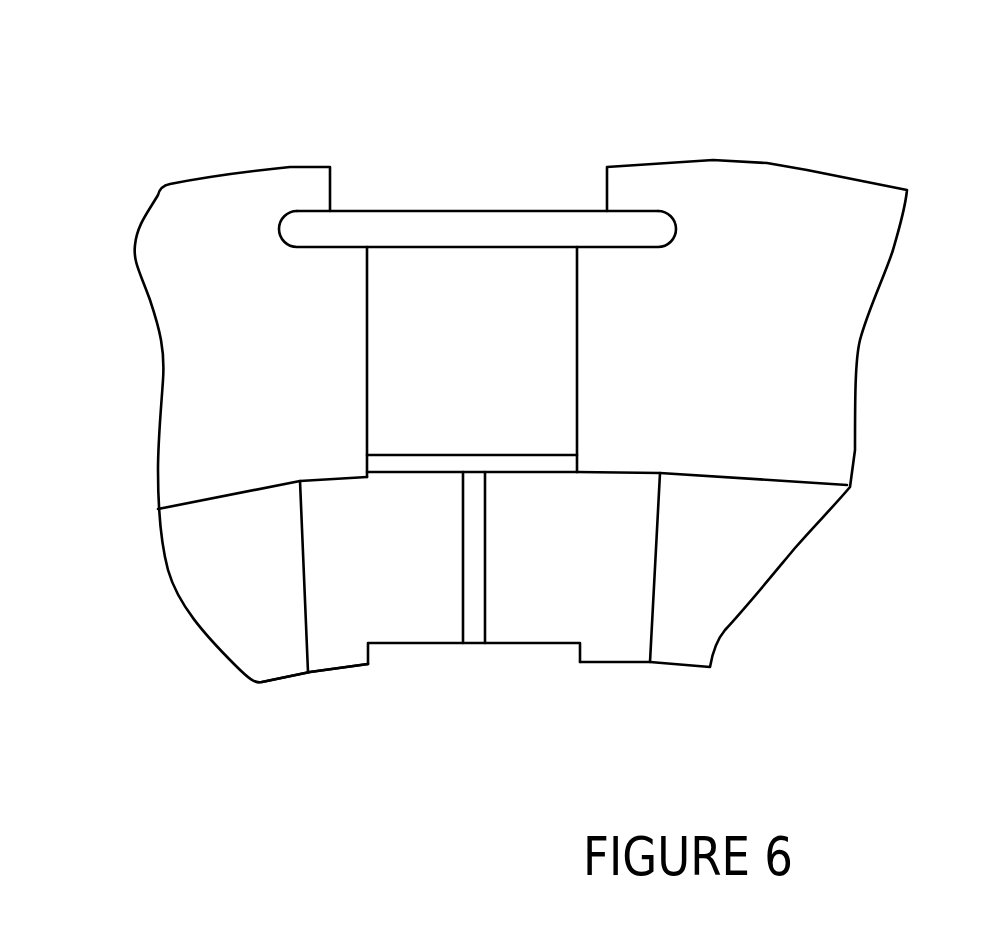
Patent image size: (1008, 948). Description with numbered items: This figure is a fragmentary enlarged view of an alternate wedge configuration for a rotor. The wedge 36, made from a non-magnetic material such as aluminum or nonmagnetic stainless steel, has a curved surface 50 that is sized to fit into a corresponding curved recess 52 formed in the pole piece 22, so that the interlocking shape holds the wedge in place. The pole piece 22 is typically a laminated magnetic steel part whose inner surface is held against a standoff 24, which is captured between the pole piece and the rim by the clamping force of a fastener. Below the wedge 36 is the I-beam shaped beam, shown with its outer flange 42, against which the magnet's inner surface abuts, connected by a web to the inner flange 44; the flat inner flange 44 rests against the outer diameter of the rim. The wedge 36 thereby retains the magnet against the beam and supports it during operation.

The pole piece 22 is at (227, 177).
The standoff 24 is at (282, 680).
The wedge 36 is at (397, 375).
The outer flange 42 is at (415, 453).
The inner flange 44 is at (430, 663).
The curved surface 50 is at (519, 130).
The curved recess 52 is at (590, 202).